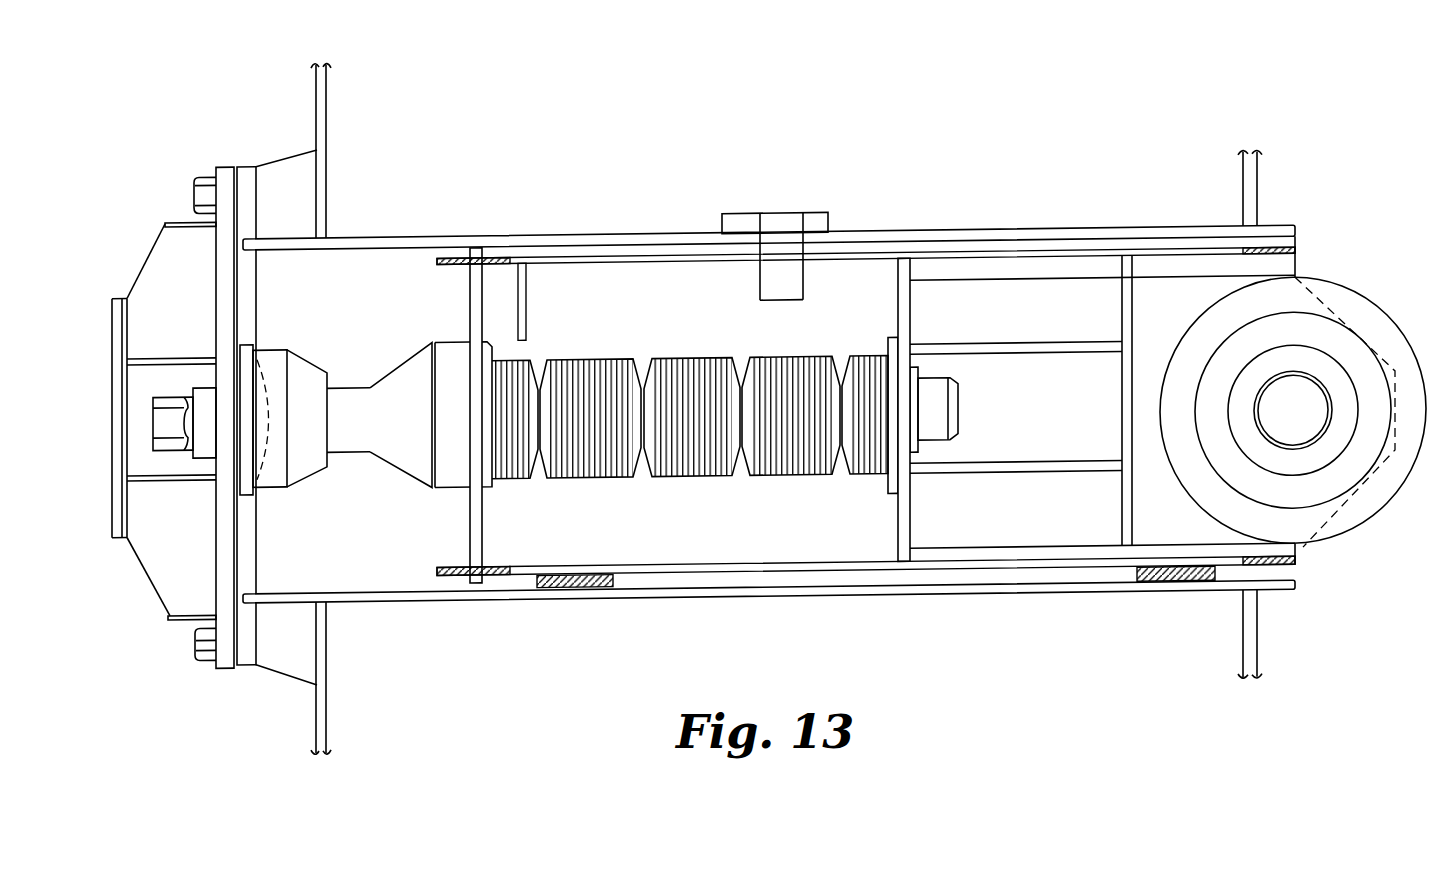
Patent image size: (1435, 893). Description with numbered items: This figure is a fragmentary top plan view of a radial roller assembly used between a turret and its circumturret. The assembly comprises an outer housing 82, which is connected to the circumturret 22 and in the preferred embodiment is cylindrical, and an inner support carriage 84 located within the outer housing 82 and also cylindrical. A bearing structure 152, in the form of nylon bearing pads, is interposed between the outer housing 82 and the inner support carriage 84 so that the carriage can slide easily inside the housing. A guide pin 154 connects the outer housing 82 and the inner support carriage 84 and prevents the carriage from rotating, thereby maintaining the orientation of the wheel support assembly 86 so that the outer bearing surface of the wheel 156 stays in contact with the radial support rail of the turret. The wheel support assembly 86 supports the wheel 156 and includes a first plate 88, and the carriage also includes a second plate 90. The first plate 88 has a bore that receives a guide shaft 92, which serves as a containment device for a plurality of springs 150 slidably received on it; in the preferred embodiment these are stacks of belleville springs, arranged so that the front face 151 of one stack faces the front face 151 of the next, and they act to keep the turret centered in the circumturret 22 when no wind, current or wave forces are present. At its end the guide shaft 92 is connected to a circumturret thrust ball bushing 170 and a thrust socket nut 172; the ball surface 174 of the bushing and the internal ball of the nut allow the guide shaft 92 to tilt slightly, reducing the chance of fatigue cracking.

The circumturret 22 is at (110, 294).
The outer housing 82 is at (778, 599).
The inner support carriage 84 is at (860, 255).
The wheel support assembly 86 is at (1302, 264).
The first plate 88 is at (905, 534).
The second plate 90 is at (474, 292).
The guide shaft 92 is at (930, 405).
The springs 150 is at (690, 414).
The front face 151 is at (540, 393).
The bearing structure 152 is at (575, 588).
The guide pin 154 is at (775, 224).
The wheel 156 is at (1337, 527).
The circumturret thrust ball bushing 170 is at (244, 338).
The thrust socket nut 172 is at (275, 345).
The ball surface 174 is at (271, 431).